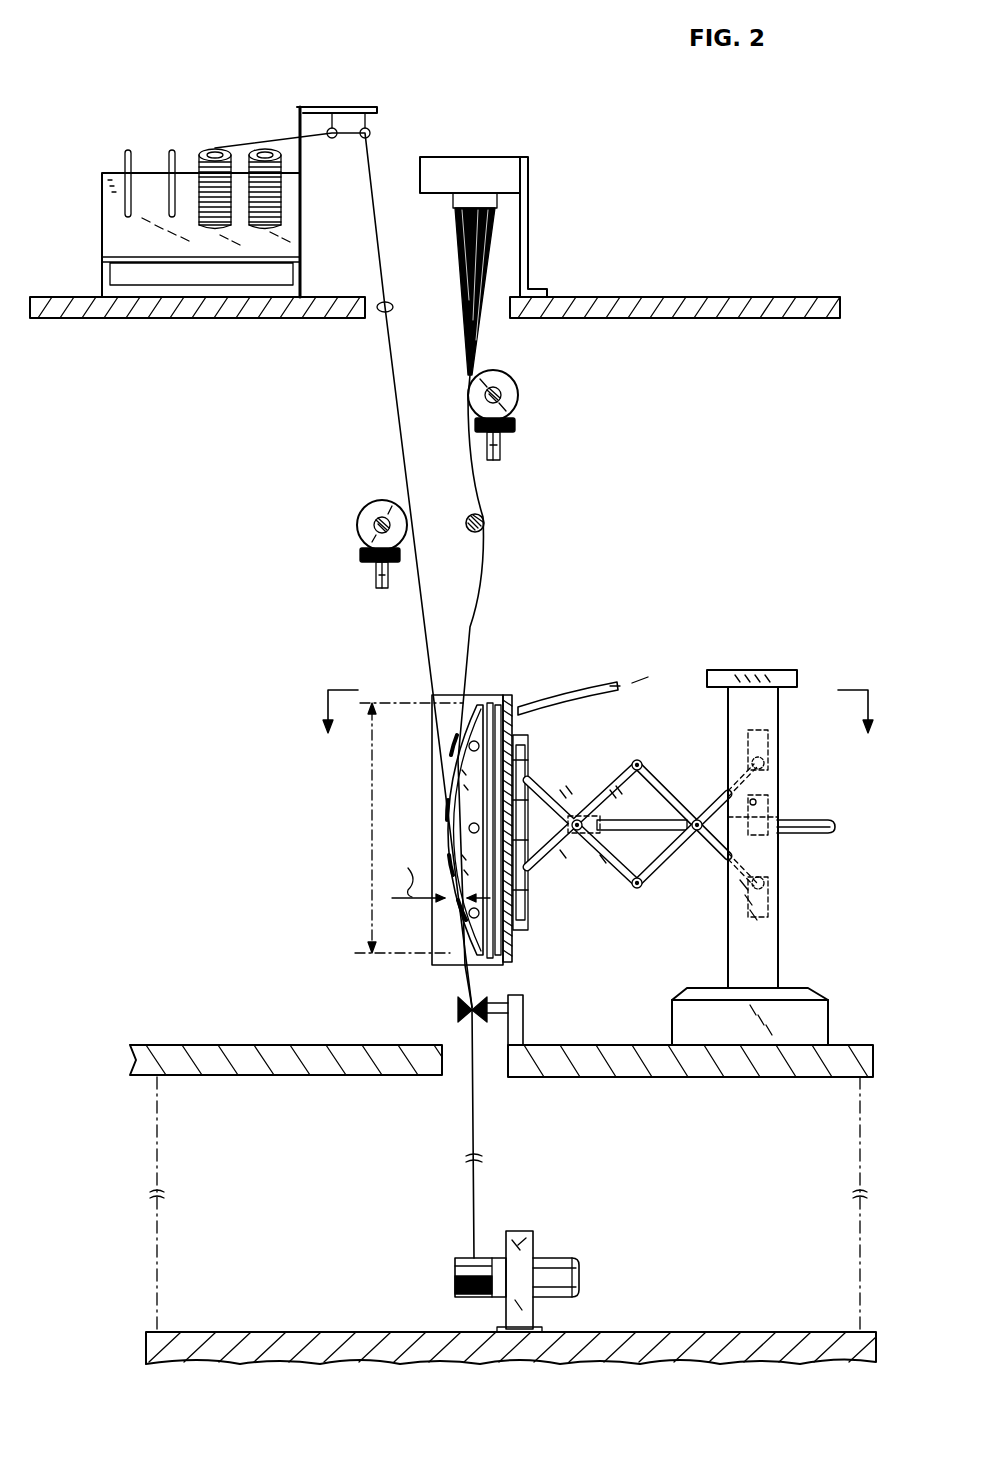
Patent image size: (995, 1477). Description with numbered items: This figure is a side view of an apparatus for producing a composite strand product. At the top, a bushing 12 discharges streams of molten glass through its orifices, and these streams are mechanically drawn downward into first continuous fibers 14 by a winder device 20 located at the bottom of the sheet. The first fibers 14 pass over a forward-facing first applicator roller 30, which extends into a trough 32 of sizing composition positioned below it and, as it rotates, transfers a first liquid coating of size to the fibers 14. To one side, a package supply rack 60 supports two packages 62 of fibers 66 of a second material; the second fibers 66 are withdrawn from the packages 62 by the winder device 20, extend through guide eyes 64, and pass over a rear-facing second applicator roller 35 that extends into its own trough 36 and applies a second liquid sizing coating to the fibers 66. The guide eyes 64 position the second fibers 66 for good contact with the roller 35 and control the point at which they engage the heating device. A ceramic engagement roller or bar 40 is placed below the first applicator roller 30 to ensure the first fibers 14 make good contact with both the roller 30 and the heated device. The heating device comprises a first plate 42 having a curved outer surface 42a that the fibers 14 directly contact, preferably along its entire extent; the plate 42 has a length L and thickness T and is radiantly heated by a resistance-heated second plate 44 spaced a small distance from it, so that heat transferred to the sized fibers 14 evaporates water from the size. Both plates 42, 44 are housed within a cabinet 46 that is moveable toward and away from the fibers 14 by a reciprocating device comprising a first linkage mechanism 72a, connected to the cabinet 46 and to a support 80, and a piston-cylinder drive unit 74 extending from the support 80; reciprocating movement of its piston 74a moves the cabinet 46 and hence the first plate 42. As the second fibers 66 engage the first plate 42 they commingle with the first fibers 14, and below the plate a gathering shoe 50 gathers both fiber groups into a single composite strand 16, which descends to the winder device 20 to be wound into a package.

The bushing 12 is at (485, 160).
The first continuous fibers 14 is at (478, 598).
The composite strand 16 is at (476, 1110).
The winder device 20 is at (443, 1273).
The first applicator roller 30 is at (512, 384).
The trough 32 is at (516, 426).
The second applicator roller 35 is at (367, 518).
The trough 36 is at (362, 557).
The engagement roller or bar 40 is at (485, 522).
The first plate 42 is at (446, 787).
The curved outer surface 42a is at (447, 830).
The resistance-heated second plate 44 is at (503, 690).
The cabinet 46 is at (515, 950).
The gathering shoe 50 is at (458, 1005).
The package supply rack 60 is at (145, 172).
The packages 62 is at (260, 148).
The guide eyes 64 is at (333, 128).
The fibers of a second material 66 is at (379, 238).
The first linkage mechanism 72a is at (612, 785).
The piston-cylinder drive unit 74 is at (800, 837).
The piston 74a is at (650, 835).
The support 80 is at (780, 940).